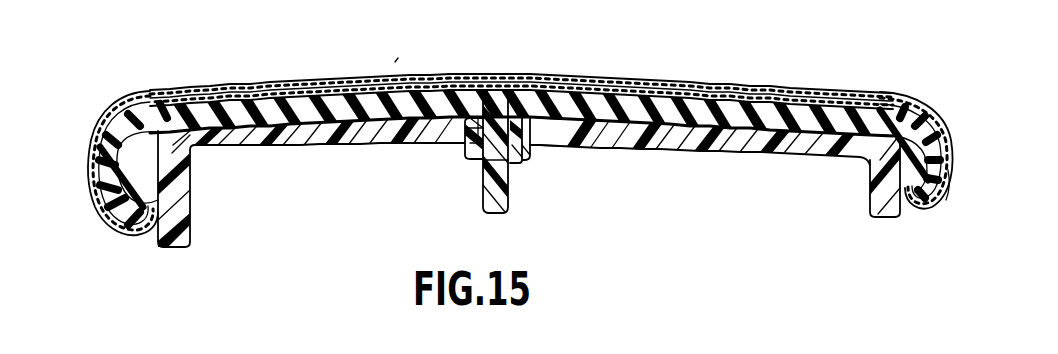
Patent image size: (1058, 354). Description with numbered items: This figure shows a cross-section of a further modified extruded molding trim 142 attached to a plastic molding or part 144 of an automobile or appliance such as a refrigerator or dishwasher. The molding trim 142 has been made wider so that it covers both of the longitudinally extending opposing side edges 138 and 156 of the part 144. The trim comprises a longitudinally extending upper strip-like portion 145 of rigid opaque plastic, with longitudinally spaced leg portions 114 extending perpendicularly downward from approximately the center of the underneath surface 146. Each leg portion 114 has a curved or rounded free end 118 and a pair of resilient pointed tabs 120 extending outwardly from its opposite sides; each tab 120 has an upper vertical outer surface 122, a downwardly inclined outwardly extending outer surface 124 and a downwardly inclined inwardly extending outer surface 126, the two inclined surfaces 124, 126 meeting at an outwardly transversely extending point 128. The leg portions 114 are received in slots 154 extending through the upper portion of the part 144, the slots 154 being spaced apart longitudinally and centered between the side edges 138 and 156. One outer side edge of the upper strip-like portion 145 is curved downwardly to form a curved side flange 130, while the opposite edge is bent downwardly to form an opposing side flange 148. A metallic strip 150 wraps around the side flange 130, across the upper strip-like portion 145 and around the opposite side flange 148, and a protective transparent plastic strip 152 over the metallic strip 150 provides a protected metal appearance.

The leg portion 114 is at (510, 197).
The curved or rounded free end 118 is at (500, 210).
The pointed tab 120 is at (470, 168).
The upper vertical outer surface 122 is at (465, 133).
The downwardly inclined outwardly extending outer surface 124 is at (467, 141).
The downwardly inclined inwardly extending outer surface 126 is at (485, 190).
The outwardly transversely extending point 128 is at (468, 157).
The curved side flange 130 is at (108, 216).
The side edge 138 is at (178, 208).
The extruded molding trim 142 is at (394, 63).
The plastic molding or part 144 is at (699, 149).
The upper strip-like portion 145 is at (650, 108).
The underneath surface 146 is at (753, 87).
The opposing side flange 148 is at (946, 206).
The metallic strip 150 is at (238, 83).
The protective transparent plastic strip 152 is at (307, 81).
The slot 154 is at (481, 93).
The side edge 156 is at (877, 192).